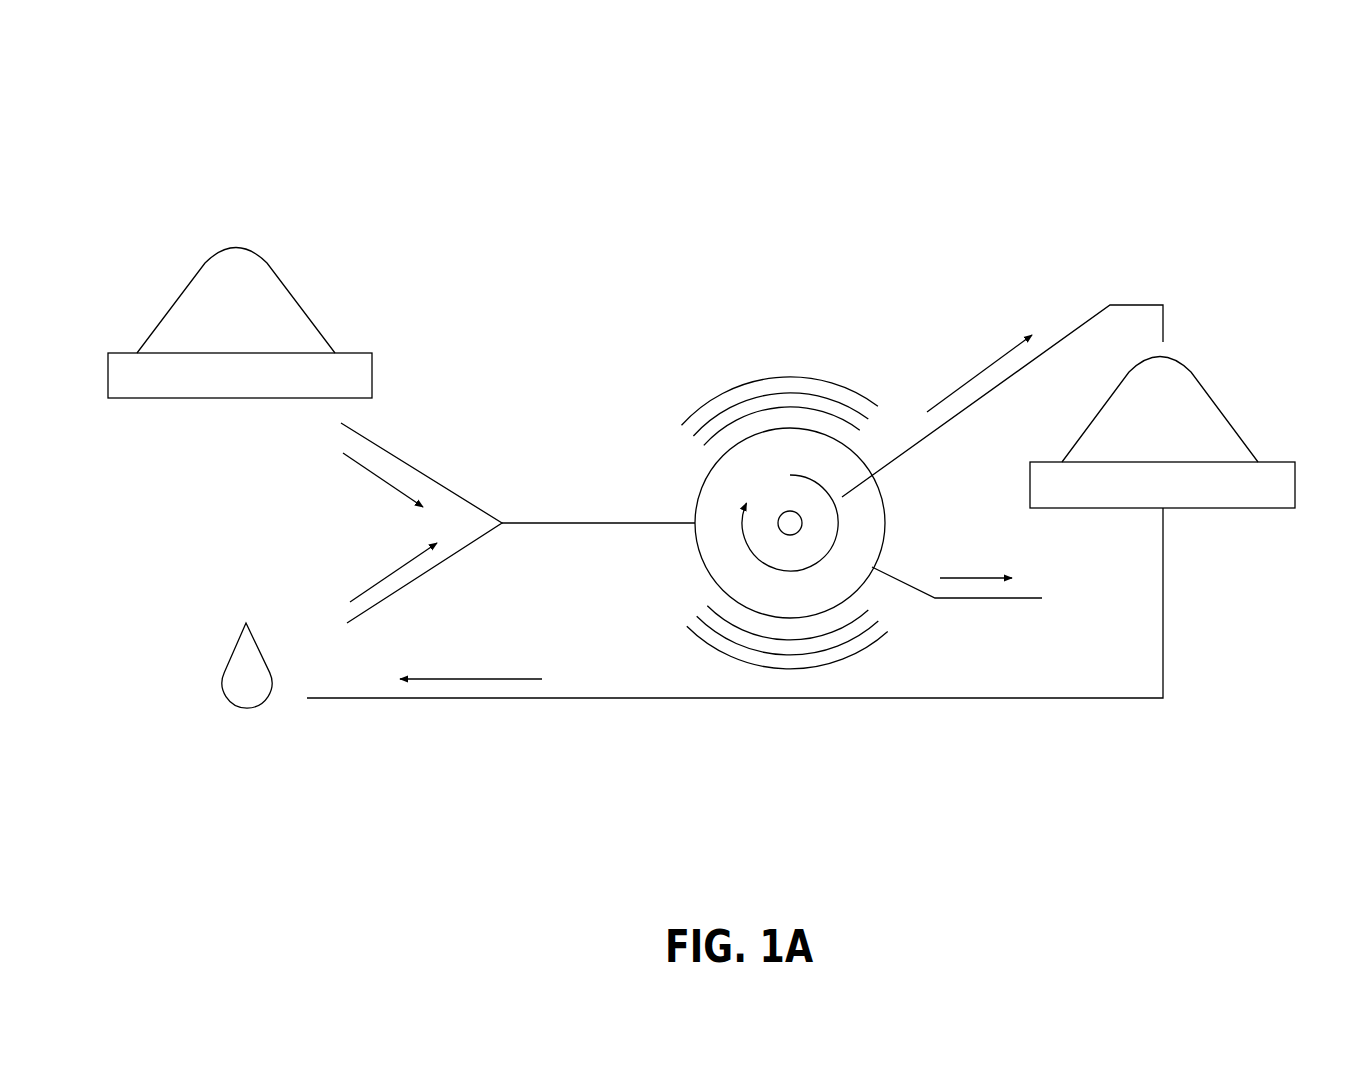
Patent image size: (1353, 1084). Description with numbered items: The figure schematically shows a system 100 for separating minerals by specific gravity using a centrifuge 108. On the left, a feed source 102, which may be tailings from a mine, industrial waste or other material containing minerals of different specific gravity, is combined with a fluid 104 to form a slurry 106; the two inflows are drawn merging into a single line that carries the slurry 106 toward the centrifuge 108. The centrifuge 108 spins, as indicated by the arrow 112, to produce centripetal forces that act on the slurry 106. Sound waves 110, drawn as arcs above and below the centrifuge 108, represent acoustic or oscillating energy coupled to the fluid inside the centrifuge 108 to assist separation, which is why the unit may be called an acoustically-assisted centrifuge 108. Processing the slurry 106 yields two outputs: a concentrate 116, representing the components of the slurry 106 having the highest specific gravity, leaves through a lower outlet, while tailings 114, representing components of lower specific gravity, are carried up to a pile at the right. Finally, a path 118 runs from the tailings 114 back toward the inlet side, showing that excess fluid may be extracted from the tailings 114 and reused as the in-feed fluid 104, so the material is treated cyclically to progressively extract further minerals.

The system 100 is at (260, 88).
The feed source 102 is at (212, 235).
The fluid 104 is at (217, 610).
The slurry 106 is at (512, 505).
The centrifuge 108 is at (693, 492).
The sound waves 110 is at (678, 377).
The arrow 112 is at (740, 543).
The tailings 114 is at (1105, 262).
The concentrate 116 is at (983, 607).
The path 118 is at (1093, 708).